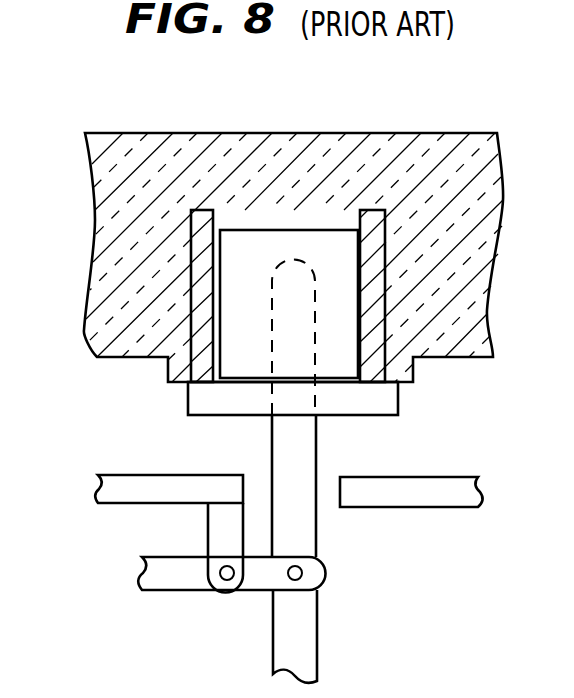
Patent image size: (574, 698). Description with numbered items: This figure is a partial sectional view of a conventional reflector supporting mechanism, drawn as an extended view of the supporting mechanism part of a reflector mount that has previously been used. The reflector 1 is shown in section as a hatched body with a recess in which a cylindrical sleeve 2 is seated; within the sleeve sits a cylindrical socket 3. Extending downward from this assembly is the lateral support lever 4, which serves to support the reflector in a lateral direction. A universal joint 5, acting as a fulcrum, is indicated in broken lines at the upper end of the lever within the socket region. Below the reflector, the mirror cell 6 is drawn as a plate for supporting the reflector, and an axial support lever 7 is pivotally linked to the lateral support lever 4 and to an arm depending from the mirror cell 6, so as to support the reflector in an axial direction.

The reflector 1 is at (347, 142).
The cylindrical sleeve 2 is at (386, 277).
The cylindrical socket 3 is at (338, 230).
The lateral support lever 4 is at (307, 525).
The universal joint 5 is at (290, 278).
The mirror cell 6 is at (102, 485).
The axial support lever 7 is at (165, 570).